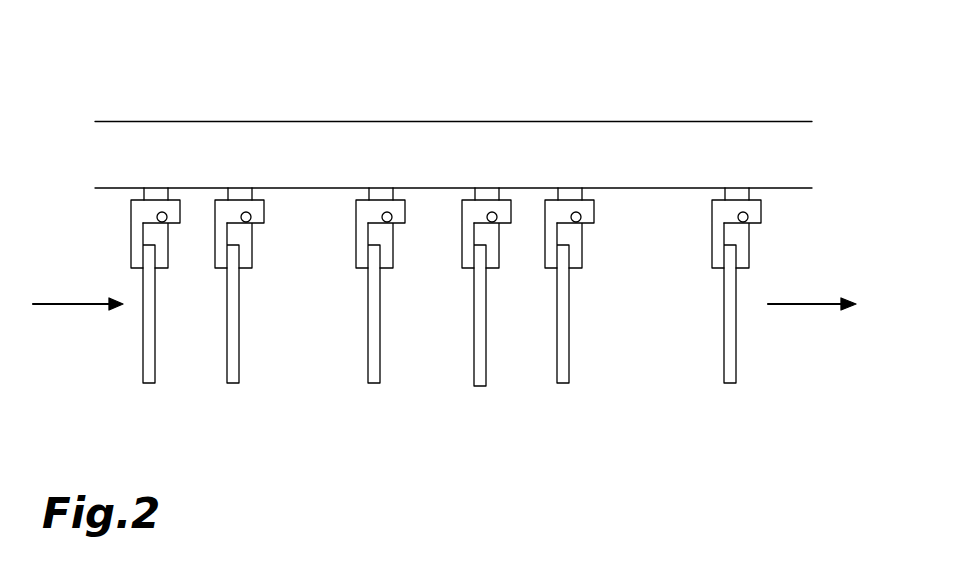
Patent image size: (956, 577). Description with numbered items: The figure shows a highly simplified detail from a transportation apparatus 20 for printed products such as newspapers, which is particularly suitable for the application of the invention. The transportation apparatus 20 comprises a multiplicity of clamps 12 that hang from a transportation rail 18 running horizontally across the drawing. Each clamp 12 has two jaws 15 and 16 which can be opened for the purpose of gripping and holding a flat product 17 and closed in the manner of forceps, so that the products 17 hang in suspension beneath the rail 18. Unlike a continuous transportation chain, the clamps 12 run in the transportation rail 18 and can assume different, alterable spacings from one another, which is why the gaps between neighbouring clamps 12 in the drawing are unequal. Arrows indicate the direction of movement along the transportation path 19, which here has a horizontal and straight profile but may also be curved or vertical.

The transportation apparatus 20 is at (295, 85).
The transportation rail 18 is at (652, 153).
The clamp 12 is at (472, 208).
The jaw 15 is at (467, 262).
The flat product 17 is at (480, 386).
The jaw 16 is at (495, 263).
The transportation path 19 is at (782, 304).